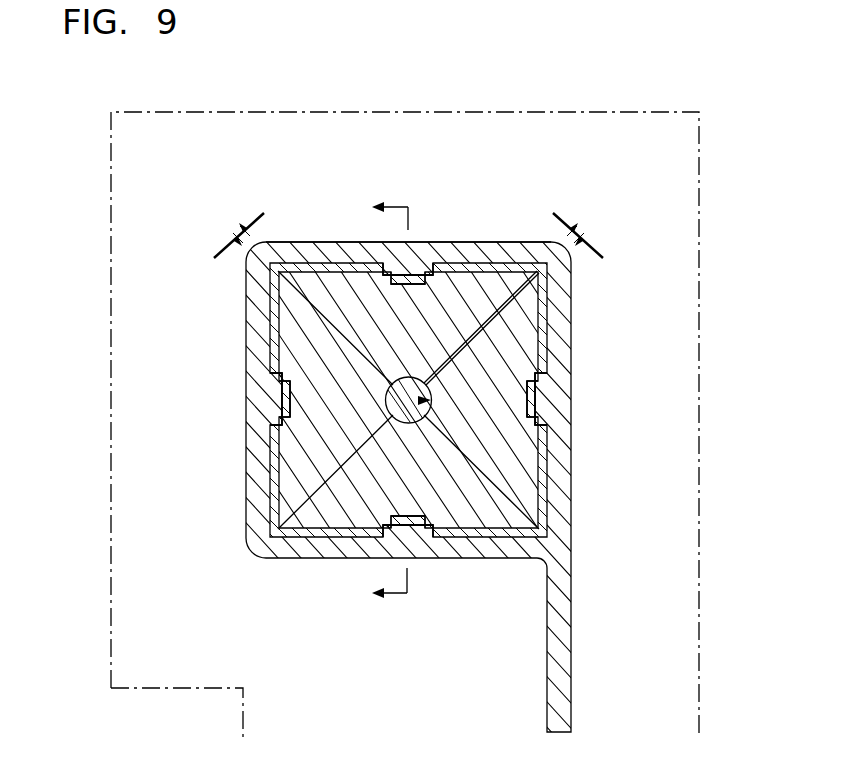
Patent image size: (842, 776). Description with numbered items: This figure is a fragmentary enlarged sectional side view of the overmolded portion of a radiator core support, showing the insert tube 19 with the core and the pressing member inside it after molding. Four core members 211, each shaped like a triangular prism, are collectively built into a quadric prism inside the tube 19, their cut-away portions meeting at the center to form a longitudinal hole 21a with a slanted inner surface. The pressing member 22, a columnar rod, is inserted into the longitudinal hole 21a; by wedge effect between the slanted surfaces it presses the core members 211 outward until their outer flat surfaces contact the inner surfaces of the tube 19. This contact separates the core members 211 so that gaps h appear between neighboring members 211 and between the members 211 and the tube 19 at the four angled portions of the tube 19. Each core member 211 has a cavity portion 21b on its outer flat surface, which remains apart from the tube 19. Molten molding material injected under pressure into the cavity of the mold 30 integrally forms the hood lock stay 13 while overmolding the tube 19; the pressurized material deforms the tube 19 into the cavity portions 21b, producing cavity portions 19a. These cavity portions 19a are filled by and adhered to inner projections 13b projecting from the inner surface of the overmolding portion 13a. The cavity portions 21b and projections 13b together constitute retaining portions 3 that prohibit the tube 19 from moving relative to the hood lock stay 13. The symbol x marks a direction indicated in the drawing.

The retaining portion 3 is at (428, 62).
The hood lock stay 13 is at (564, 628).
The overmolding portion 13a is at (305, 242).
The inner projection 13b is at (394, 282).
The tube 19 is at (545, 308).
The cavity portion 19a is at (432, 268).
The longitudinal hole 21a is at (412, 428).
The cavity portion 21b is at (432, 268).
The pressing member 22 is at (388, 413).
The mold 30 is at (584, 110).
The core member 211 is at (478, 290).
The gap h is at (262, 214).
The direction indicator x is at (390, 402).